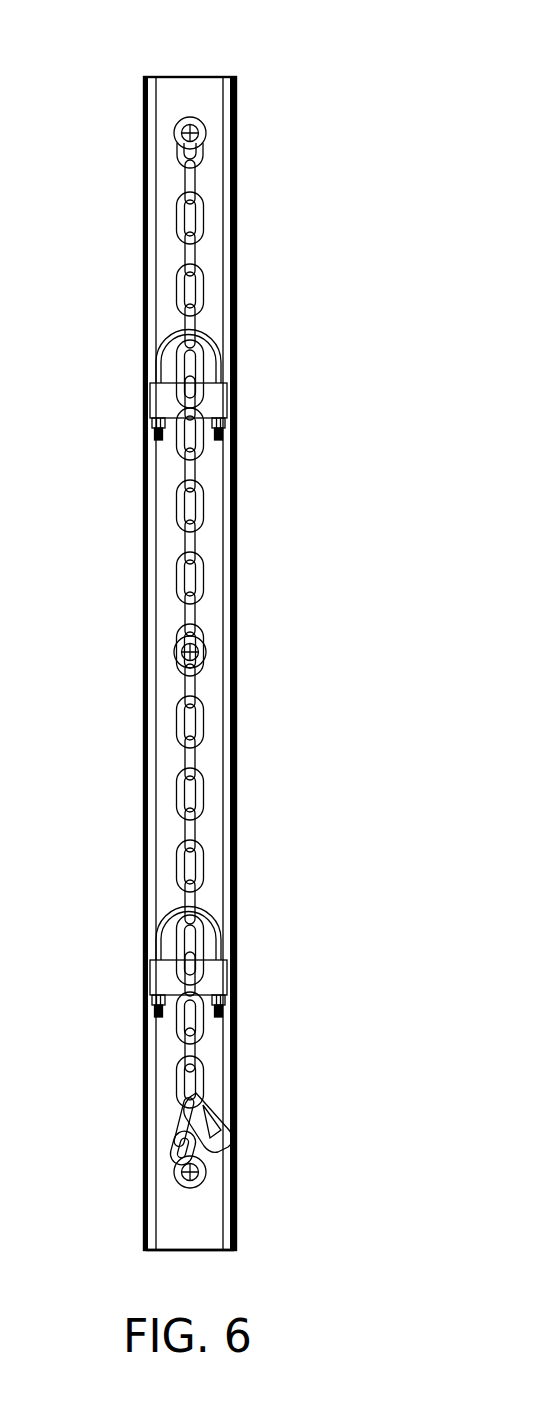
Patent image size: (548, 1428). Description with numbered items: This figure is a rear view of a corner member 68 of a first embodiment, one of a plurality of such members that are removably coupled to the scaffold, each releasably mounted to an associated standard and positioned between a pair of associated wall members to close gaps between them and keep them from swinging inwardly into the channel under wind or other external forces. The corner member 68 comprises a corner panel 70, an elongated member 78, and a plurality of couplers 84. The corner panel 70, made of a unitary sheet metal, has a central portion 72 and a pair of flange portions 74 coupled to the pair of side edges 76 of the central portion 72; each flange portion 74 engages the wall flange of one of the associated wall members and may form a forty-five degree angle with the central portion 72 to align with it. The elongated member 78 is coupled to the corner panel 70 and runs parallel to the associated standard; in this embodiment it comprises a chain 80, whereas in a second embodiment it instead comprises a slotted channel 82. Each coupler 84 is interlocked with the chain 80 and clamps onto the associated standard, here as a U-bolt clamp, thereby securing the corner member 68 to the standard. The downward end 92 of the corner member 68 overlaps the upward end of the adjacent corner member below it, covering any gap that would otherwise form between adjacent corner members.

The corner member 68 is at (188, 42).
The corner panel 70 is at (249, 271).
The central portion 72 is at (207, 228).
The flange portion 74 is at (228, 147).
The side edge 76 is at (157, 100).
The elongated member 78 is at (200, 544).
The chain 80 is at (180, 513).
The slotted channel 82 is at (238, 357).
The coupler 84 is at (157, 405).
The downward end 92 is at (189, 1252).